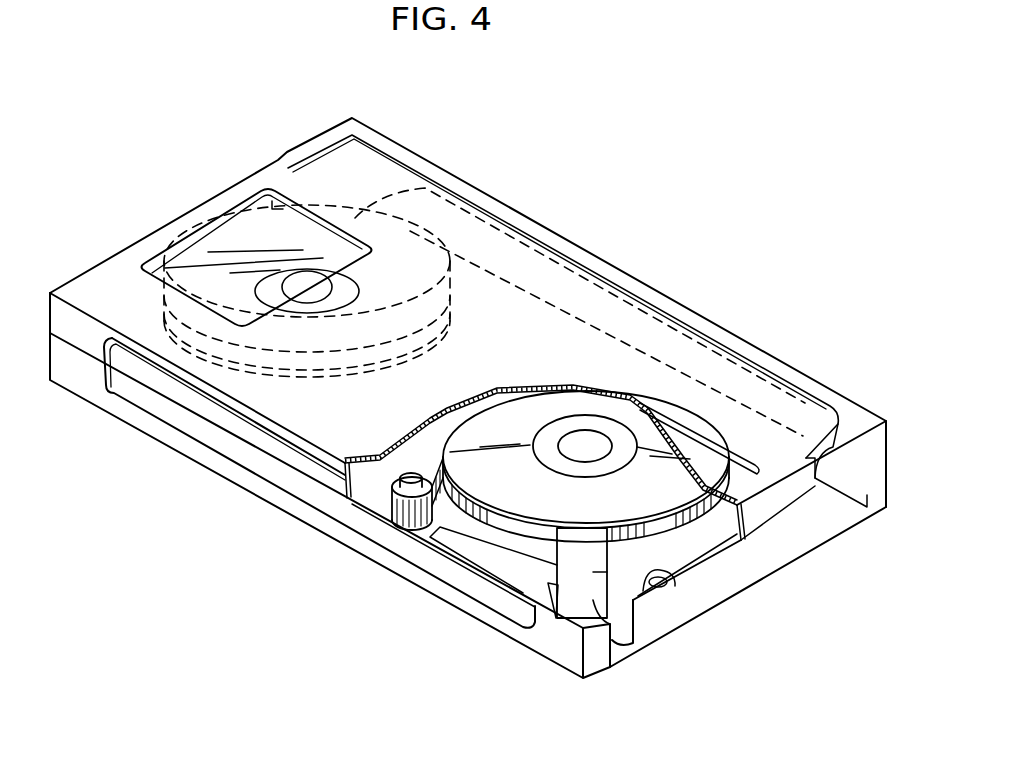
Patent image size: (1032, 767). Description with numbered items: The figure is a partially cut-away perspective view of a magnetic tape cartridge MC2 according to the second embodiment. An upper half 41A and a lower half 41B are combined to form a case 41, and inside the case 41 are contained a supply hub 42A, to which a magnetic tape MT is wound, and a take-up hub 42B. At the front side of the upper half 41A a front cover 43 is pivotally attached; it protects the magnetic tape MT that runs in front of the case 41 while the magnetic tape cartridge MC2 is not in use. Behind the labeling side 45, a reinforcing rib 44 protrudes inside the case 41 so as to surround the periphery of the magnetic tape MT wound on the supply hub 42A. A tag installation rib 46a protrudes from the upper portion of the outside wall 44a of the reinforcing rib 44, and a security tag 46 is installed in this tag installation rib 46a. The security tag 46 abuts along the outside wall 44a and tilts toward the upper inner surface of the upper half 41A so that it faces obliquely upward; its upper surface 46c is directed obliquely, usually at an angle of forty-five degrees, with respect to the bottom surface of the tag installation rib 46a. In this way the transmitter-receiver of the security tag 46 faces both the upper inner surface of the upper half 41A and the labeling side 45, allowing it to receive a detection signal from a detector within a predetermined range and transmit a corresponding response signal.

The magnetic tape cartridge MC2 is at (537, 192).
The case 41 is at (470, 392).
The upper half 41A is at (470, 364).
The lower half 41B is at (468, 505).
The supply hub 42A is at (645, 440).
The take-up hub 42B is at (260, 181).
The front cover 43 is at (393, 157).
The reinforcing rib 44 is at (439, 568).
The outside wall 44a is at (421, 552).
The labeling side 45 is at (288, 475).
The security tag 46 is at (575, 643).
The tag installation rib 46a is at (577, 598).
The upper surface 46c is at (607, 572).
The magnetic tape MT is at (440, 523).